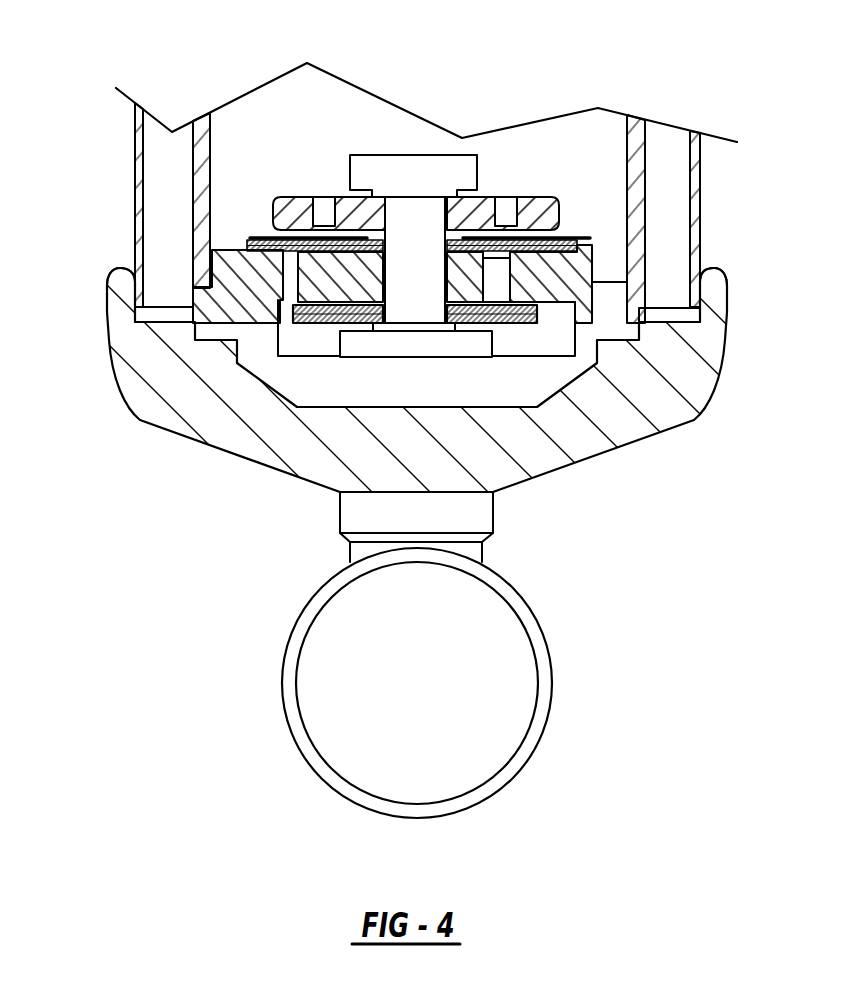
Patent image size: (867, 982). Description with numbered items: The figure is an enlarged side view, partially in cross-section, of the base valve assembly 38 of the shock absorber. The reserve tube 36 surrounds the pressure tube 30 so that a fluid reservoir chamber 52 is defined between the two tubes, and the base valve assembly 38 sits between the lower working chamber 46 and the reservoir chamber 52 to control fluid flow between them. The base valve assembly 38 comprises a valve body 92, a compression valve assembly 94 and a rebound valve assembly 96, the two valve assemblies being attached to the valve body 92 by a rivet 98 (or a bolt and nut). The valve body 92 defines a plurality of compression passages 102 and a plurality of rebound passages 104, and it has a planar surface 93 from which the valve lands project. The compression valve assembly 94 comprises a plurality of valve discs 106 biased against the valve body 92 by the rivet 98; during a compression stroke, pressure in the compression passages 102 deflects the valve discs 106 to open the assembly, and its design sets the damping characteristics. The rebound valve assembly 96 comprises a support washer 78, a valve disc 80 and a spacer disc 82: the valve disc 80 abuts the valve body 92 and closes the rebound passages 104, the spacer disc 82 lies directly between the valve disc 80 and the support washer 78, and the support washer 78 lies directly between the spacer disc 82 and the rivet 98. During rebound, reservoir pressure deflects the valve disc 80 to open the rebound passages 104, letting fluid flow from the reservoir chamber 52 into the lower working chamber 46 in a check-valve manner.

The pressure tube 30 is at (633, 138).
The reserve tube 36 is at (133, 112).
The base valve assembly 38 is at (700, 382).
The lower working chamber 46 is at (292, 123).
The fluid reservoir chamber 52 is at (663, 178).
The support washer 78 is at (327, 203).
The valve disc 80 is at (287, 241).
The spacer disc 82 is at (293, 233).
The valve body 92 is at (645, 320).
The planar surface 93 is at (222, 218).
The compression valve assembly 94 is at (310, 348).
The rebound valve assembly 96 is at (533, 170).
The rivet 98 is at (417, 360).
The compression passages 102 is at (497, 276).
The rebound passages 104 is at (287, 263).
The valve discs 106 is at (290, 328).